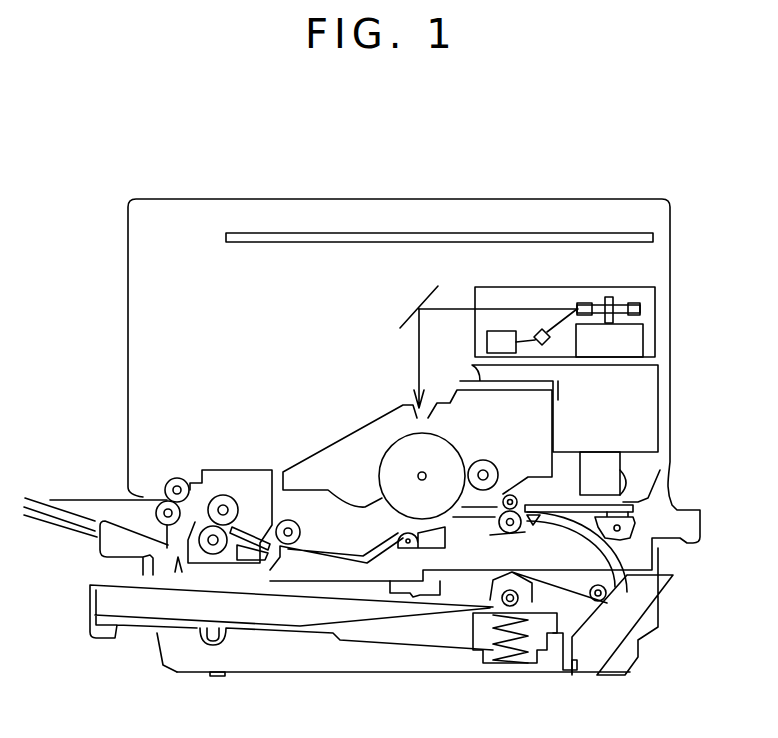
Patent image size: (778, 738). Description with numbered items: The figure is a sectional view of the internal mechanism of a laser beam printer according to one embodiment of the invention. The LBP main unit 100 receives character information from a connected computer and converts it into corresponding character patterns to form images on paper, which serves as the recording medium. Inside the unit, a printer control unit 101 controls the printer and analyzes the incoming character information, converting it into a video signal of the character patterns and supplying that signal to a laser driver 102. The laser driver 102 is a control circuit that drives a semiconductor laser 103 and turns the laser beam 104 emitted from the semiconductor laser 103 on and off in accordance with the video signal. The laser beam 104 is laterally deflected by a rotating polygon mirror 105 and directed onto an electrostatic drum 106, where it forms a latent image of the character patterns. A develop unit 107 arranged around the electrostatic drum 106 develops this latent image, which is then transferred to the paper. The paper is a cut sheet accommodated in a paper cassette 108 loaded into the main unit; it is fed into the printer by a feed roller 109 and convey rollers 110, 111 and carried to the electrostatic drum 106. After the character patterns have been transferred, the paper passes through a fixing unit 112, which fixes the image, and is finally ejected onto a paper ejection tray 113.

The LBP main unit 100 is at (577, 199).
The printer control unit 101 is at (645, 233).
The laser driver 102 is at (487, 341).
The semiconductor laser 103 is at (548, 349).
The laser beam 104 is at (550, 309).
The rotating polygon mirror 105 is at (640, 310).
The electrostatic drum 106 is at (404, 436).
The develop unit 107 is at (353, 442).
The paper cassette 108 is at (90, 588).
The feed roller 109 is at (490, 612).
The convey roller 110 is at (598, 603).
The convey roller 111 is at (505, 523).
The fixing unit 112 is at (215, 473).
The paper ejection tray 113 is at (38, 495).